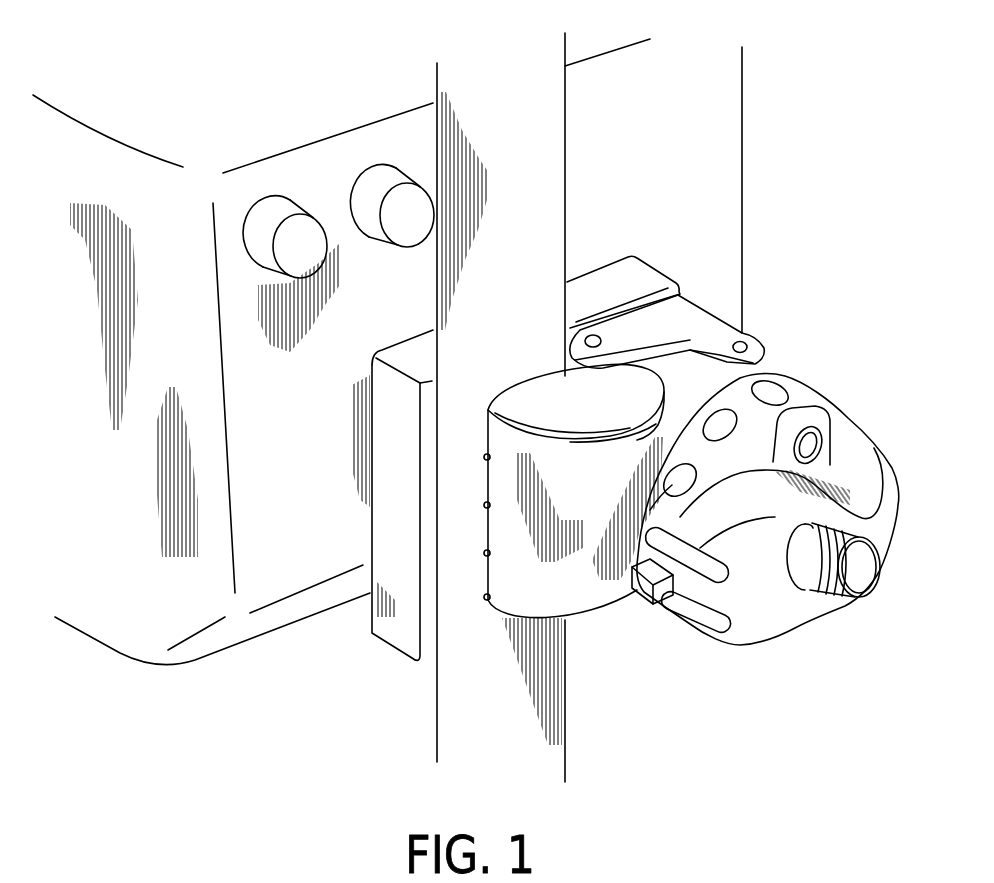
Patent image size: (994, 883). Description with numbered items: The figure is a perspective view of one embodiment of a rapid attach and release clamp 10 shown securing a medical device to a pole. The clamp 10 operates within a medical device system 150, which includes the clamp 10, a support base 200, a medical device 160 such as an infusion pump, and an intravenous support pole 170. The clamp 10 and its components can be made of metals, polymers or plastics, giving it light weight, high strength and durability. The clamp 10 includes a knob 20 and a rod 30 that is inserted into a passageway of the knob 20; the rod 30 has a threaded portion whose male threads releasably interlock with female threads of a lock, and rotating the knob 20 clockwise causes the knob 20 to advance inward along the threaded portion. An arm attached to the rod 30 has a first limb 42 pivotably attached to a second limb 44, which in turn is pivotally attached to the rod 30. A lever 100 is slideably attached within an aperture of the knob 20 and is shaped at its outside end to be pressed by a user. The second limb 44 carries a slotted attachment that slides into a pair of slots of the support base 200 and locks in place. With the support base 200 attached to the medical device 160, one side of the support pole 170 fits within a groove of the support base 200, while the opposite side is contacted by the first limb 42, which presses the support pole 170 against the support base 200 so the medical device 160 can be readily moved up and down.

The rapid attach and release clamp 10 is at (780, 483).
The knob 20 is at (900, 475).
The rod 30 is at (847, 610).
The first limb 42 is at (588, 582).
The second limb 44 is at (713, 328).
The lever 100 is at (660, 602).
The medical device system 150 is at (306, 70).
The medical device 160 is at (727, 150).
The intravenous (IV) support pole 170 is at (538, 740).
The support base 200 is at (402, 648).